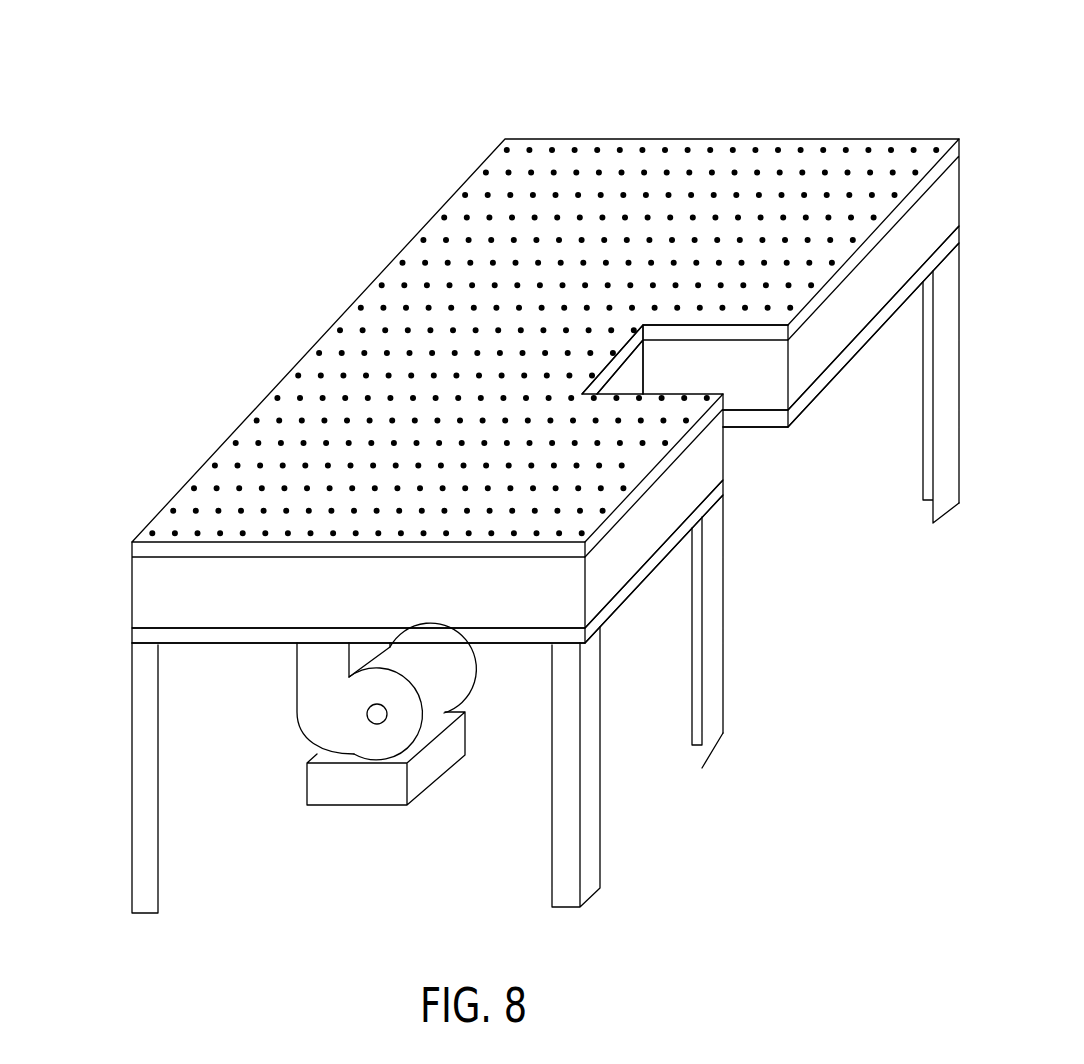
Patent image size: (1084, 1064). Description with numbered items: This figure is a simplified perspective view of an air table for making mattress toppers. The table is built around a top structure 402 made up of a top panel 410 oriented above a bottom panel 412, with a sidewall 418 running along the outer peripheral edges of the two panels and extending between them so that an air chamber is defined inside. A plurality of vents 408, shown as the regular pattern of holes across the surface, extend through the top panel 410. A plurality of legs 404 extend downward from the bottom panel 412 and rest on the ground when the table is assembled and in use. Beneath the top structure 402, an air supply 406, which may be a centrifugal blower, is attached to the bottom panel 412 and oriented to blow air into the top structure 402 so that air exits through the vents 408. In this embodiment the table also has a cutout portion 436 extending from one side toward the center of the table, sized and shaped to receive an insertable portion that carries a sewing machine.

The top structure 402 is at (501, 487).
The legs 404 is at (138, 885).
The air supply 406 is at (290, 722).
The vents 408 is at (597, 149).
The top panel 410 is at (538, 305).
The bottom panel 412 is at (138, 637).
The sidewall 418 is at (537, 603).
The cutout portion 436 is at (748, 468).